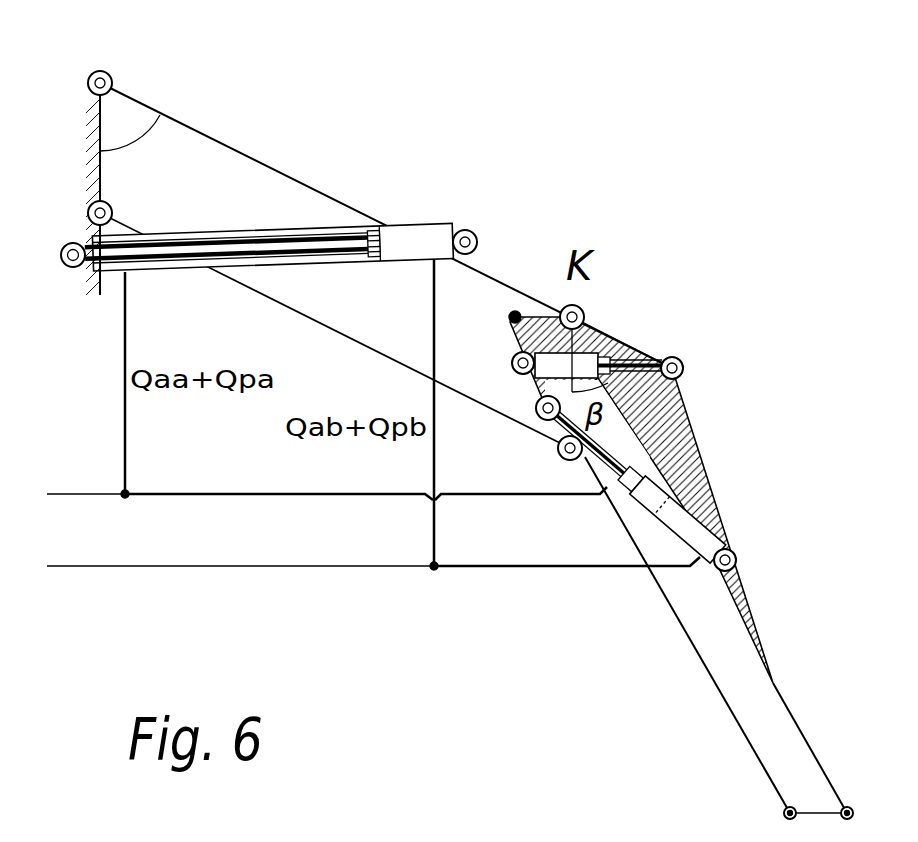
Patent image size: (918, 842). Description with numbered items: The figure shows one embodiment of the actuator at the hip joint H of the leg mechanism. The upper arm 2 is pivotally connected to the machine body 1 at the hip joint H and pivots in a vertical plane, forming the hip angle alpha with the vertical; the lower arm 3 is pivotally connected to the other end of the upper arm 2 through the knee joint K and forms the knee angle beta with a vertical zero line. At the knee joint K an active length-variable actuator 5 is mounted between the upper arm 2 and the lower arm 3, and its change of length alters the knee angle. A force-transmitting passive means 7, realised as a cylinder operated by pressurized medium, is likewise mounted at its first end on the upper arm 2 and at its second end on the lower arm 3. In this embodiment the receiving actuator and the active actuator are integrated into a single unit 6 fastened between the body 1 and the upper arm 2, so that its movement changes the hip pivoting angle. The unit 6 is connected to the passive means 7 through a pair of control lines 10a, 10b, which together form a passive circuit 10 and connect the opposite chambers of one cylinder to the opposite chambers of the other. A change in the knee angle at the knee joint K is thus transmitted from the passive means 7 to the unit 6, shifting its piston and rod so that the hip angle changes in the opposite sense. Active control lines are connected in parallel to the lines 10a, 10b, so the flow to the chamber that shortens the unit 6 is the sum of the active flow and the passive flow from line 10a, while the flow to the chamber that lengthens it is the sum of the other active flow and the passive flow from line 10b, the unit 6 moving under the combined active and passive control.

The body 1 is at (100, 193).
The upper arm 2 is at (320, 192).
The lower arm 3 is at (800, 725).
The active length-variable actuator 5 is at (672, 368).
The unit 6 is at (197, 238).
The force-transmitting passive means 7 is at (655, 493).
The passive circuit 10 is at (433, 447).
The control line 10a is at (592, 497).
The control line 10b is at (465, 568).